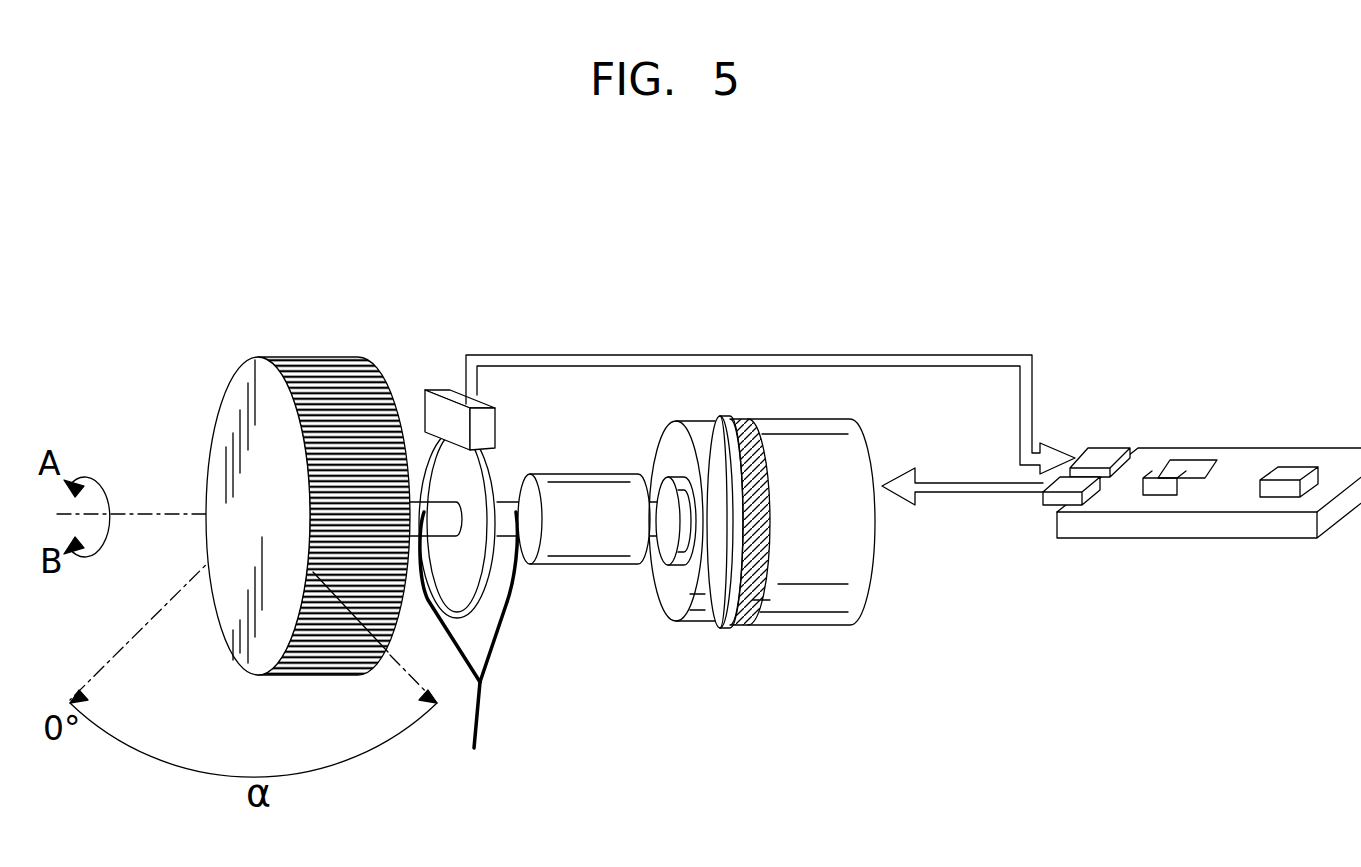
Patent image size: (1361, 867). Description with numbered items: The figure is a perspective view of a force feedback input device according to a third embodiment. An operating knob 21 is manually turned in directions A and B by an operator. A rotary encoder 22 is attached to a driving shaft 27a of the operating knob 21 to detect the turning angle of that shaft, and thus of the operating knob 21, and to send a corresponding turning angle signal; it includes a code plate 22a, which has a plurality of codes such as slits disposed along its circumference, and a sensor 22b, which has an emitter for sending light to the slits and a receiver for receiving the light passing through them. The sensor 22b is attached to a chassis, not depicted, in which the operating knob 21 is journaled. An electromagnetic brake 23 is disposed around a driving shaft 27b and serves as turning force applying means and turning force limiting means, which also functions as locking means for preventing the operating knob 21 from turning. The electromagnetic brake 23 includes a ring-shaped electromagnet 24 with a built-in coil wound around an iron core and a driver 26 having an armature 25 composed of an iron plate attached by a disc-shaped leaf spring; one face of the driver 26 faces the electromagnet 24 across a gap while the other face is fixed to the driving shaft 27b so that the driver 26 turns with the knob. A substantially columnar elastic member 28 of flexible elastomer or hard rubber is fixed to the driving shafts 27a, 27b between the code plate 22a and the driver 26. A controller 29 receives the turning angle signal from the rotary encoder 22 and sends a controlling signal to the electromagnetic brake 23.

The operating knob 21 is at (343, 393).
The rotary encoder 22 is at (738, 412).
The code plate 22a is at (467, 485).
The sensor 22b is at (600, 279).
The electromagnetic brake 23 is at (756, 611).
The electromagnet 24 is at (802, 580).
The armature 25 is at (716, 632).
The driver 26 is at (700, 610).
The driving shaft 27a is at (468, 656).
The driving shaft 27b is at (667, 572).
The elastic member 28 is at (568, 552).
The controller 29 is at (1236, 477).